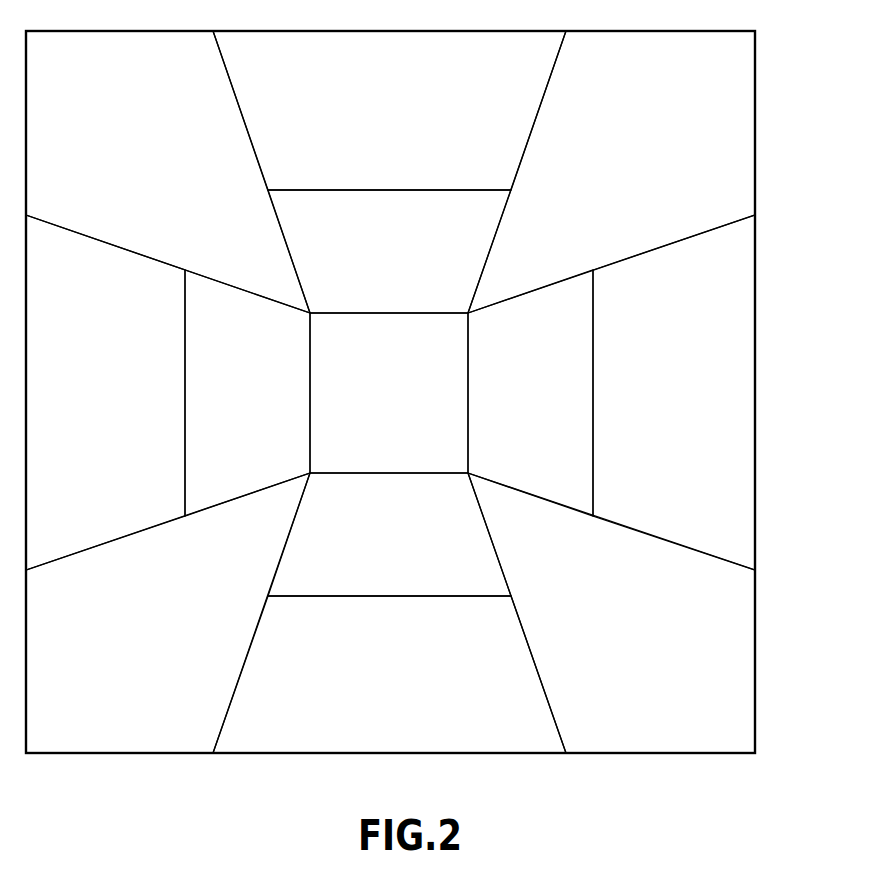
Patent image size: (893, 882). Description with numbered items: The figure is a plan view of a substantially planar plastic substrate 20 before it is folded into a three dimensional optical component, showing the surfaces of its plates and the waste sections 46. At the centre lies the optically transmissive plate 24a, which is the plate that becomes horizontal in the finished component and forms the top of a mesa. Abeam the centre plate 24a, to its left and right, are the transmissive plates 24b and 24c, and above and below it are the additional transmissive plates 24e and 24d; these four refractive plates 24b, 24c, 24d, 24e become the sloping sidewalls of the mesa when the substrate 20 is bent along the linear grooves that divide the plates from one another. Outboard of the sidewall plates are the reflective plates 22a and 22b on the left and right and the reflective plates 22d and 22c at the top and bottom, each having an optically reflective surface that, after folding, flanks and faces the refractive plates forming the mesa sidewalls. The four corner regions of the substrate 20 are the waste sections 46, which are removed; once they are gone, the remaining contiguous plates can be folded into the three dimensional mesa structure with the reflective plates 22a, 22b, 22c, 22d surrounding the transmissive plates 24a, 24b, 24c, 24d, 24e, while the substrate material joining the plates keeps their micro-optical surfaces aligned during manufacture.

The plastic substrate 20 is at (755, 630).
The reflective plate 22a is at (114, 408).
The reflective plate 22b is at (699, 407).
The reflective plate 22c is at (414, 694).
The reflective plate 22d is at (417, 130).
The optically transmissive plate 24a is at (416, 408).
The transmissive plate 24b is at (264, 408).
The transmissive plate 24c is at (553, 406).
The transmissive plate 24d is at (414, 540).
The transmissive plate 24e is at (417, 279).
The waste section 46 is at (142, 166).